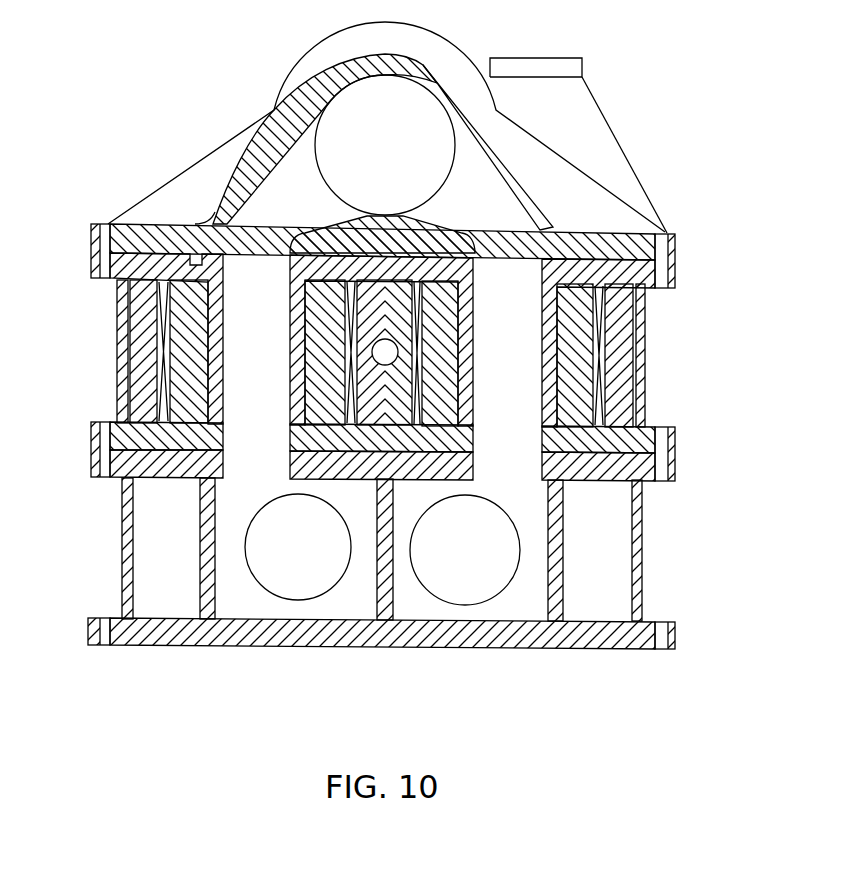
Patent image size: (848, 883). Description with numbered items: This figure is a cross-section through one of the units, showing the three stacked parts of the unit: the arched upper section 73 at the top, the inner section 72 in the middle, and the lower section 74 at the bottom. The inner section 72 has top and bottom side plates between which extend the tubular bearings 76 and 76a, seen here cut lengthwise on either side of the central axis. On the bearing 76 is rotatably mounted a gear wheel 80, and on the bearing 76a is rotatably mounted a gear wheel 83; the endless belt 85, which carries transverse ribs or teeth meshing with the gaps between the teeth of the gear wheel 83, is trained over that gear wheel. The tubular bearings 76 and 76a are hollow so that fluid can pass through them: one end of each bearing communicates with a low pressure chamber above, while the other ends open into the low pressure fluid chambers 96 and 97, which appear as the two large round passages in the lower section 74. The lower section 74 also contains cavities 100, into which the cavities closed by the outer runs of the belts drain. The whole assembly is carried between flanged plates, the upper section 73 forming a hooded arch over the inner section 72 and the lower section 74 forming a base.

The upper section 73 is at (583, 195).
The inner section 72 is at (663, 342).
The gear wheel 83 is at (177, 313).
The tubular bearing 76a is at (213, 355).
The endless belt 85 is at (138, 397).
The gear wheel 80 is at (587, 318).
The tubular bearing 76 is at (552, 404).
The cavity 100 is at (612, 527).
The lower section 74 is at (647, 587).
The low pressure fluid chamber 97 is at (283, 587).
The low pressure fluid chamber 96 is at (473, 592).